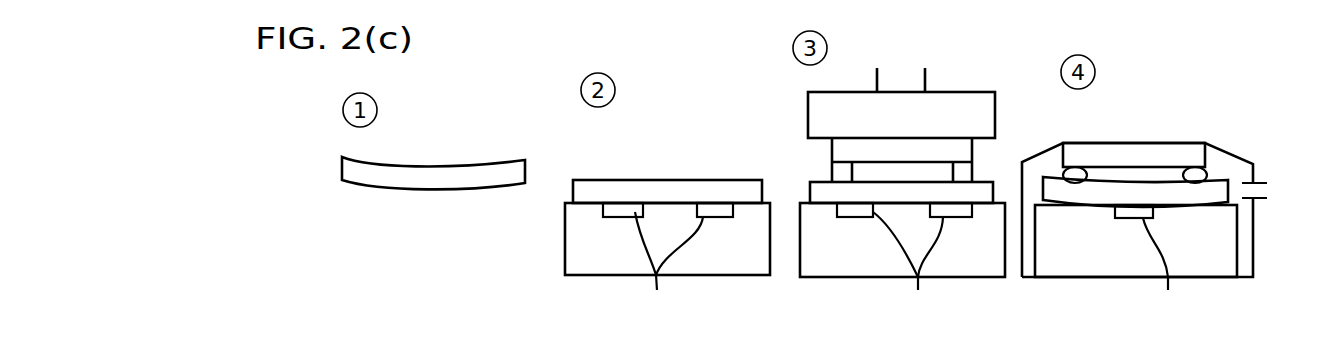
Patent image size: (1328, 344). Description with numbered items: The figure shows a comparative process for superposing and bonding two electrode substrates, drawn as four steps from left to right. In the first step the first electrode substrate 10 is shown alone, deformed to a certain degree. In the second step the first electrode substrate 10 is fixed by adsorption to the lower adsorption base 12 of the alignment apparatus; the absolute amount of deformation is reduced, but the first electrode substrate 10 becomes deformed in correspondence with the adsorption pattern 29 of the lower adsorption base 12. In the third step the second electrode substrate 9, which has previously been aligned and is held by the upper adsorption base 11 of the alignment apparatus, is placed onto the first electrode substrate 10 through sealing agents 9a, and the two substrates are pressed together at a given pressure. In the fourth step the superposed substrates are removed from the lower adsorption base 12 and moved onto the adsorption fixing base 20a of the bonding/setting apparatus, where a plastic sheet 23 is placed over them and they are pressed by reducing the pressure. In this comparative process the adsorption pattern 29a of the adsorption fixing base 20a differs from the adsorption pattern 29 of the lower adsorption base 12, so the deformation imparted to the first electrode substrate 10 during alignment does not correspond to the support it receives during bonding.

The first electrode substrate 10 is at (502, 172).
The lower adsorption base 12 is at (577, 240).
The adsorption pattern 29 is at (787, 261).
The upper adsorption base 11 is at (973, 104).
The second electrode substrate 9 is at (840, 148).
The sealing agents 9a is at (968, 172).
The plastic sheet 23 is at (1230, 152).
The adsorption fixing base 20a is at (1073, 262).
The adsorption pattern 29a is at (1155, 259).